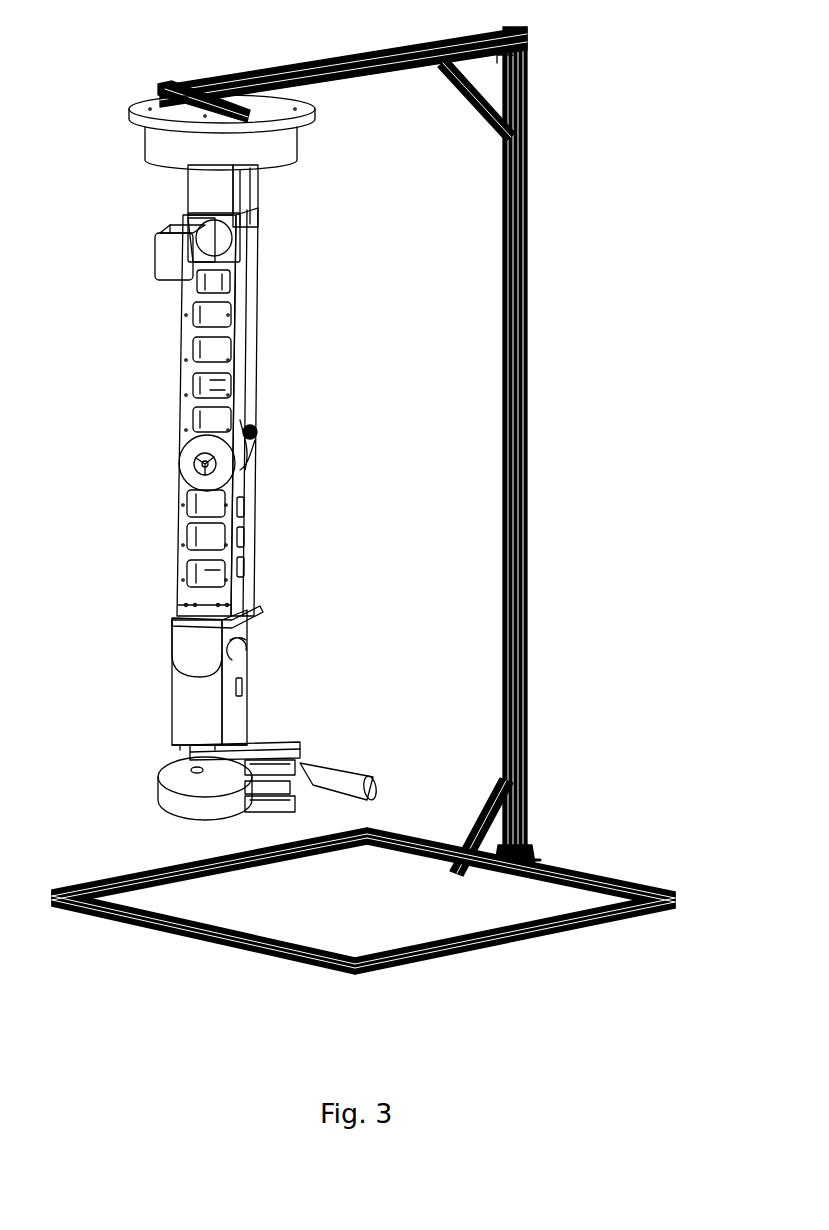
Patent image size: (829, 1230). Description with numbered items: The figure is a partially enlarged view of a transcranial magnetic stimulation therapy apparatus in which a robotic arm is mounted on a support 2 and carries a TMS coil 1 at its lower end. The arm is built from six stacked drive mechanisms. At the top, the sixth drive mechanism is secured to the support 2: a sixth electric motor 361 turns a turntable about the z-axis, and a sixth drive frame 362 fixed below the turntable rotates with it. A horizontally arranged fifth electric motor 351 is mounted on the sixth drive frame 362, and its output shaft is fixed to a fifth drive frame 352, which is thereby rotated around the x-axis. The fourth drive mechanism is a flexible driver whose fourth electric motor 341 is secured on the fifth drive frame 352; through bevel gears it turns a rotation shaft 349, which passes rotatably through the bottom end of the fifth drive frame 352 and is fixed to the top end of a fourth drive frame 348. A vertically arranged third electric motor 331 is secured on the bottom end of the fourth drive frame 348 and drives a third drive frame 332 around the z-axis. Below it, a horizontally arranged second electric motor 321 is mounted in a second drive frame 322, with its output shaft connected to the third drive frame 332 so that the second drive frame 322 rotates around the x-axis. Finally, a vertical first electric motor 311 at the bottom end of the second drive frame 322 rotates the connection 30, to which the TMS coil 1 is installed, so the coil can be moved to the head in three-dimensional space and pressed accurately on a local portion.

The TMS coil 1 is at (150, 792).
The support 2 is at (520, 652).
The connection 30 is at (275, 812).
The first electric motor 311 is at (235, 685).
The second electric motor 321 is at (242, 655).
The second drive frame 322 is at (190, 708).
The third electric motor 331 is at (197, 578).
The third drive frame 332 is at (258, 612).
The fourth electric motor 341 is at (232, 317).
The fourth drive frame 348 is at (250, 525).
The rotation shaft 349 is at (240, 448).
The fifth electric motor 351 is at (162, 263).
The fifth drive frame 352 is at (192, 319).
The sixth electric motor 361 is at (253, 179).
The sixth drive frame 362 is at (195, 190).